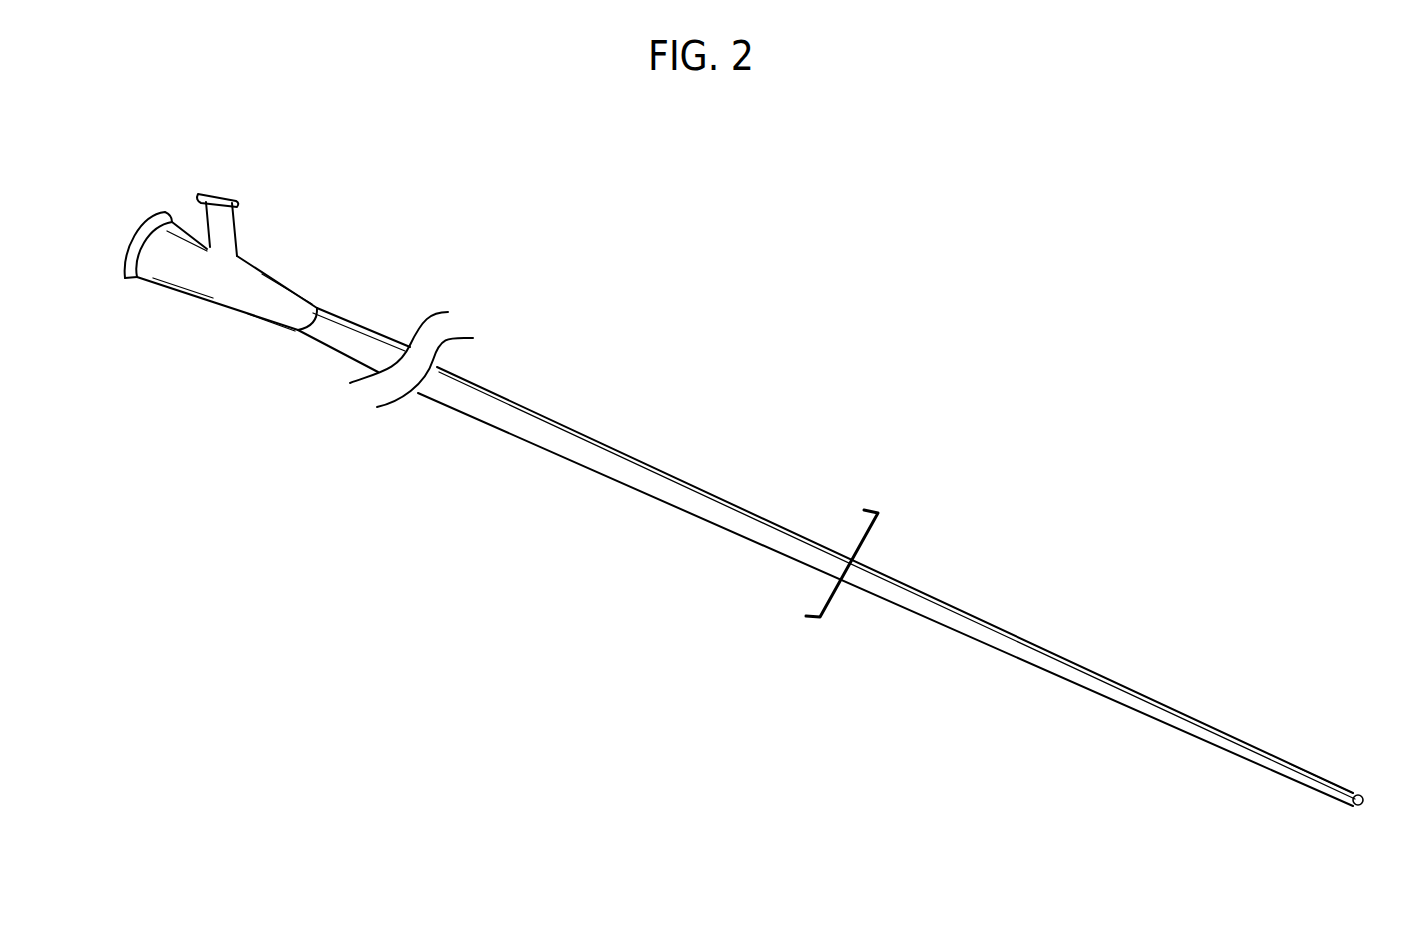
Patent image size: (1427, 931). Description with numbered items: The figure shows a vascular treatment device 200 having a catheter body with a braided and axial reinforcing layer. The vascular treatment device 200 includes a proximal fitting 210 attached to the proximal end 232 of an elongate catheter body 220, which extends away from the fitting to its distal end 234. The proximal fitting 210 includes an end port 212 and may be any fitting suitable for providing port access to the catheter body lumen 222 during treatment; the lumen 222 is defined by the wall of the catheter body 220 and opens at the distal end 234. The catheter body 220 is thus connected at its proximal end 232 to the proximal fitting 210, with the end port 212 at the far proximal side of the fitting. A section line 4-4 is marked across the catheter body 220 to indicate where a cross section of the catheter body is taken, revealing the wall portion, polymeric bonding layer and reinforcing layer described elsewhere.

The vascular treatment device 200 is at (832, 208).
The proximal fitting 210 is at (282, 248).
The end port 212 is at (137, 276).
The catheter body 220 is at (545, 383).
The catheter body lumen 222 is at (1368, 798).
The proximal end 232 is at (306, 371).
The distal end 234 is at (1312, 818).
The line 4- 4 is at (821, 548).